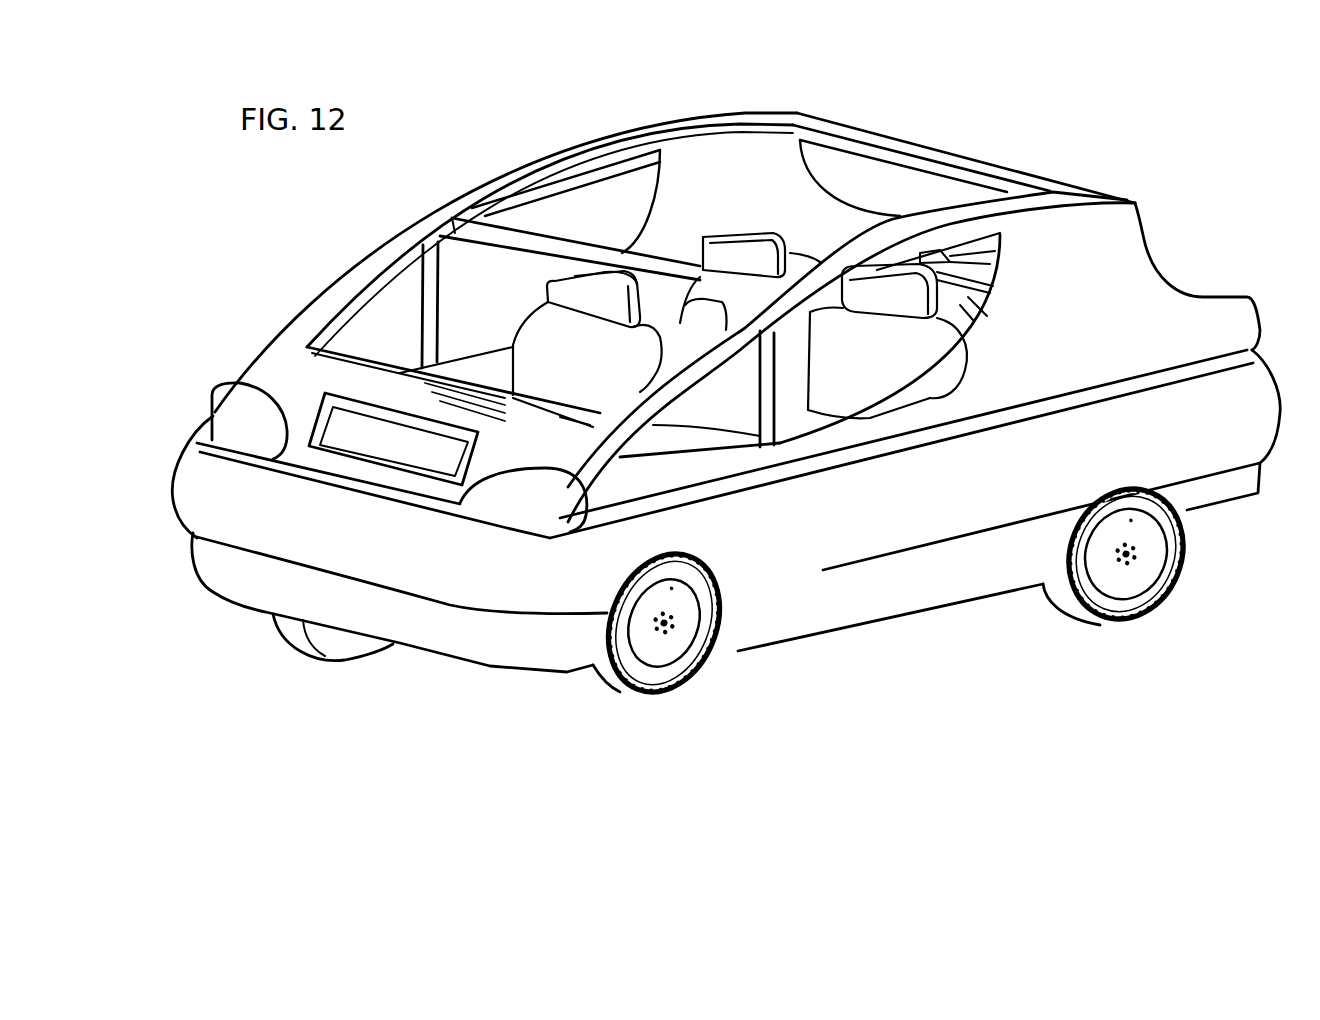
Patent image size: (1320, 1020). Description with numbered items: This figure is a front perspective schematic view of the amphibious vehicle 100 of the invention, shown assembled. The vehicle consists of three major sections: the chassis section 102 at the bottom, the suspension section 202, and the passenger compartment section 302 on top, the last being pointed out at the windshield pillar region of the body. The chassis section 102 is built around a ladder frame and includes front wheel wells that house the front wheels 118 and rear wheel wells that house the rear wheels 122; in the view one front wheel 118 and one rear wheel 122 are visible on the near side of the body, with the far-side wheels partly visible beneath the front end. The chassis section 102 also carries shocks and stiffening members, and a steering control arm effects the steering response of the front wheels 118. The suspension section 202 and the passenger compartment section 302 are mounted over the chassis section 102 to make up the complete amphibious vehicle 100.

The amphibious vehicle 100 is at (1266, 76).
The chassis section 102 is at (546, 638).
The front wheels 118 is at (717, 663).
The rear wheels 122 is at (1105, 625).
The suspension section 202 is at (408, 560).
The passenger compartment section 302 is at (296, 362).